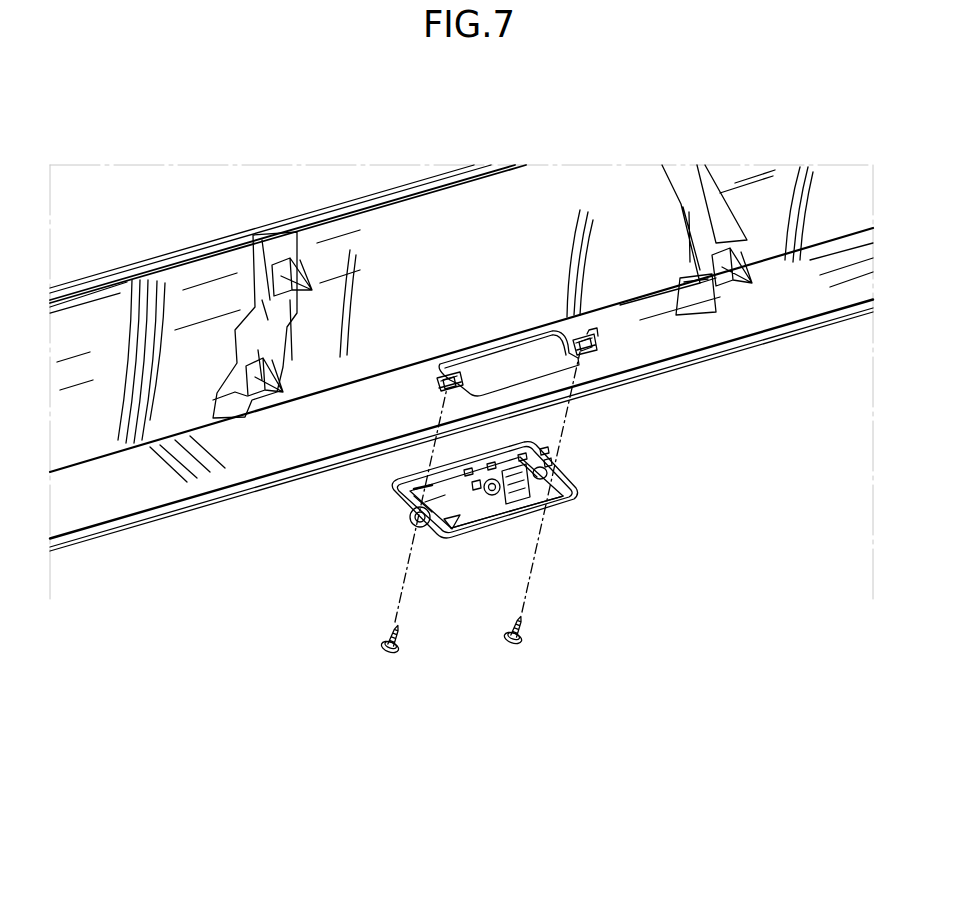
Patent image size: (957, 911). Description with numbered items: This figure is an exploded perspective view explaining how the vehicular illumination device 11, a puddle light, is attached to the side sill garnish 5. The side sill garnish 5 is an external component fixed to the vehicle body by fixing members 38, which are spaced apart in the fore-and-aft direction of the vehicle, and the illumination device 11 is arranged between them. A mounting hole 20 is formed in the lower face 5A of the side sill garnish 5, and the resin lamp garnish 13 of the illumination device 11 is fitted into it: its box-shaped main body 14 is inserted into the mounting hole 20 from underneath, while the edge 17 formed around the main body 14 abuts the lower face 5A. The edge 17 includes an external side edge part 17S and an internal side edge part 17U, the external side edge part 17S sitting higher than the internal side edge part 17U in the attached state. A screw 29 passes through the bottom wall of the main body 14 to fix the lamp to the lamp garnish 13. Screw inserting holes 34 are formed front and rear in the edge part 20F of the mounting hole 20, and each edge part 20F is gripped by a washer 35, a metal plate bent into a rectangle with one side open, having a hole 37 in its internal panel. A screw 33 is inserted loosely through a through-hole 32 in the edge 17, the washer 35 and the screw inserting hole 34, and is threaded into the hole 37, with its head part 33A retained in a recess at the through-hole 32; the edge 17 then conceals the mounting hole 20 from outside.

The side sill garnish 5 is at (407, 227).
The lower face 5A is at (150, 483).
The fixing member 38 is at (253, 247).
The mounting hole 20 is at (509, 299).
The edge part 20F is at (555, 330).
The hole 37 is at (508, 285).
The screw inserting hole 34 is at (508, 285).
The washer 35 is at (445, 385).
The vehicular illumination device 11 is at (496, 494).
The edge 17 is at (494, 494).
The external side edge part 17S is at (443, 473).
The internal side edge part 17U is at (527, 503).
The main body 14 is at (562, 457).
The screw 29 is at (493, 496).
The through-hole 32 is at (410, 519).
The lamp garnish 13 is at (384, 492).
The screw 33 is at (490, 567).
The head part 33A is at (525, 641).